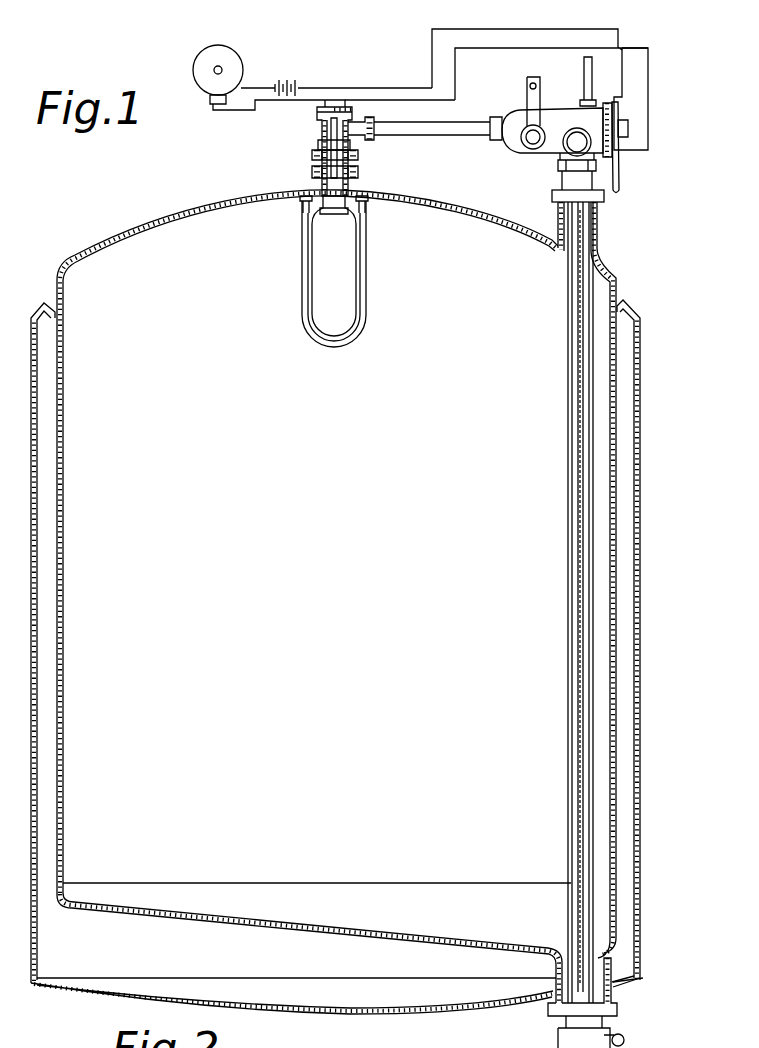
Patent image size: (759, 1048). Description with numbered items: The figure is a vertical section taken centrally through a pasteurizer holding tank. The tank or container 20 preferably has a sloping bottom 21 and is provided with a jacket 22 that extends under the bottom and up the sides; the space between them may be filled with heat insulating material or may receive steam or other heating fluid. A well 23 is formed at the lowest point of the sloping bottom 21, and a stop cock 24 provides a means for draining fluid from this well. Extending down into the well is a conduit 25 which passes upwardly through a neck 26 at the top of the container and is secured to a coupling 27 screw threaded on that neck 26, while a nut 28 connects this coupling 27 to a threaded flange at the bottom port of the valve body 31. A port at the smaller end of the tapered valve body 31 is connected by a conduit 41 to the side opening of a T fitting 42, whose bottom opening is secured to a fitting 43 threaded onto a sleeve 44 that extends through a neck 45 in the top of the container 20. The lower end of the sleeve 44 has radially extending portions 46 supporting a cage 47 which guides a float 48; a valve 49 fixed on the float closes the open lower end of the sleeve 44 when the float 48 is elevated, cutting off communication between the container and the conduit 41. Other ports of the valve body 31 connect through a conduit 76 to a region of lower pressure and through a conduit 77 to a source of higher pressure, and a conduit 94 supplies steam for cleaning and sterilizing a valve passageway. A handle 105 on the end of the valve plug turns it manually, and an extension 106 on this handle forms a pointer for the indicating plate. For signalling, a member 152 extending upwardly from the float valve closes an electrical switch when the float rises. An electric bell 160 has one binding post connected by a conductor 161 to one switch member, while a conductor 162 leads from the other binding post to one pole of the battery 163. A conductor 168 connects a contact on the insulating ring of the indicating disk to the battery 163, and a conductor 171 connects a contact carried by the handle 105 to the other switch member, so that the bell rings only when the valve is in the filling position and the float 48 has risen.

The tank or container 20 is at (117, 242).
The sloping bottom 21 is at (386, 936).
The jacket 22 is at (640, 613).
The well 23 is at (606, 996).
The stop cock 24 is at (556, 1042).
The conduit 25 is at (578, 768).
The neck 26 is at (597, 241).
The coupling 27 is at (561, 184).
The nut 28 is at (556, 166).
The valve body 31 is at (554, 113).
The conduit 41 is at (444, 134).
The T fitting 42 is at (320, 132).
The fitting 43 is at (359, 157).
The sleeve 44 is at (314, 160).
The neck 45 is at (360, 176).
The radially extending portions 46 is at (304, 213).
The cage 47 is at (368, 300).
The float 48 is at (330, 298).
The valve 49 is at (358, 218).
The conduit 76 is at (527, 104).
The conduit 77 is at (538, 88).
The conduit 94 is at (594, 78).
The handle 105 is at (620, 165).
The extension 106 is at (622, 119).
The member 152 is at (318, 118).
The electric bell 160 is at (222, 58).
The conductor 161 is at (245, 106).
The conductor 162 is at (256, 80).
The battery 163 is at (292, 84).
The conductor 168 is at (623, 96).
The conductor 171 is at (496, 48).